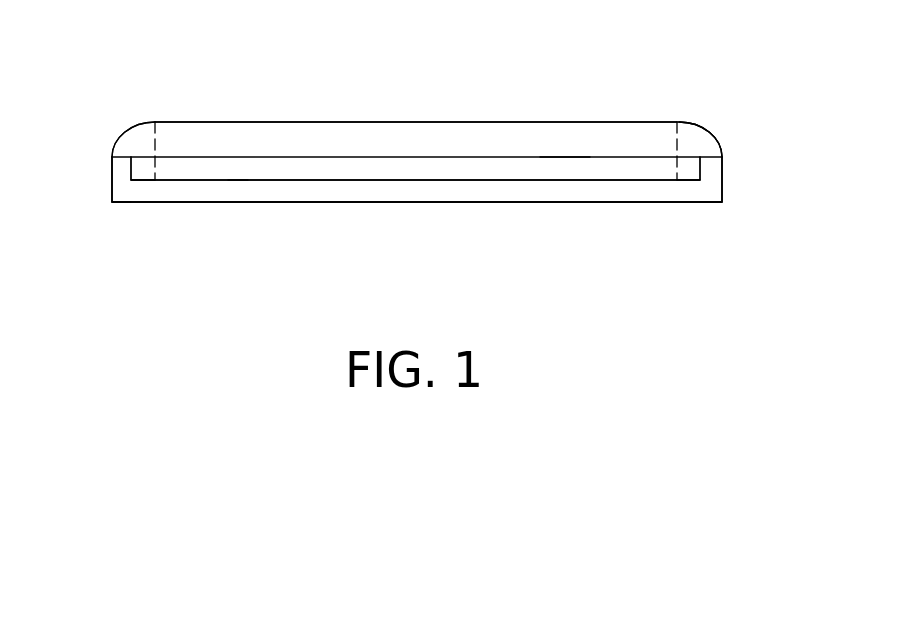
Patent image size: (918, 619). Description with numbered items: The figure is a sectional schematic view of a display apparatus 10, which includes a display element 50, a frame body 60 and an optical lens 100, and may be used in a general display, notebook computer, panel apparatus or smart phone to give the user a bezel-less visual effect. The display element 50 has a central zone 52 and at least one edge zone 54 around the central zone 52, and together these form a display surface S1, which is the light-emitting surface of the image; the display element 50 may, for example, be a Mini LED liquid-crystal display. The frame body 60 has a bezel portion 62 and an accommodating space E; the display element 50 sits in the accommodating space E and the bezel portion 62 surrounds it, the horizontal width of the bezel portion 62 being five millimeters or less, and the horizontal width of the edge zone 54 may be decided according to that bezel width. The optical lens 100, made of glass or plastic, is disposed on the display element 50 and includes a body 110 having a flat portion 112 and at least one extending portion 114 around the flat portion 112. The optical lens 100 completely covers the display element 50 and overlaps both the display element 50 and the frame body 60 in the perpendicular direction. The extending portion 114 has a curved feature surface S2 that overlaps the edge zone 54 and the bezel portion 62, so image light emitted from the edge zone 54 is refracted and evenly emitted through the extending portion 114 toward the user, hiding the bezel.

The optical lens 100 is at (179, 99).
The body 110 is at (293, 119).
The flat portion 112 is at (428, 135).
The extending portion 114 is at (137, 142).
The display surface S1 is at (565, 150).
The feature surface S2 is at (712, 122).
The display element 50 is at (623, 182).
The central zone 52 is at (447, 172).
The edge zone 54 is at (143, 177).
The frame body 60 is at (328, 203).
The bezel portion 62 is at (120, 180).
The accommodating space E is at (238, 188).
The display apparatus 10 is at (792, 295).